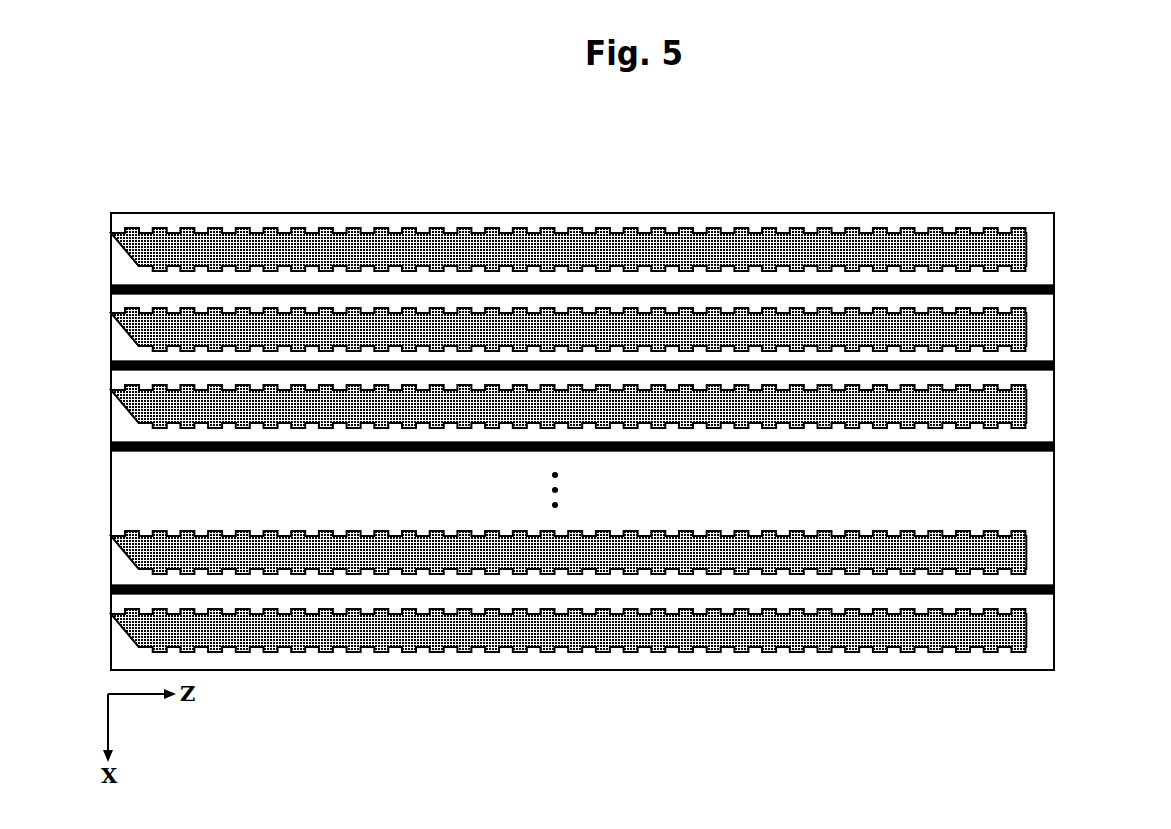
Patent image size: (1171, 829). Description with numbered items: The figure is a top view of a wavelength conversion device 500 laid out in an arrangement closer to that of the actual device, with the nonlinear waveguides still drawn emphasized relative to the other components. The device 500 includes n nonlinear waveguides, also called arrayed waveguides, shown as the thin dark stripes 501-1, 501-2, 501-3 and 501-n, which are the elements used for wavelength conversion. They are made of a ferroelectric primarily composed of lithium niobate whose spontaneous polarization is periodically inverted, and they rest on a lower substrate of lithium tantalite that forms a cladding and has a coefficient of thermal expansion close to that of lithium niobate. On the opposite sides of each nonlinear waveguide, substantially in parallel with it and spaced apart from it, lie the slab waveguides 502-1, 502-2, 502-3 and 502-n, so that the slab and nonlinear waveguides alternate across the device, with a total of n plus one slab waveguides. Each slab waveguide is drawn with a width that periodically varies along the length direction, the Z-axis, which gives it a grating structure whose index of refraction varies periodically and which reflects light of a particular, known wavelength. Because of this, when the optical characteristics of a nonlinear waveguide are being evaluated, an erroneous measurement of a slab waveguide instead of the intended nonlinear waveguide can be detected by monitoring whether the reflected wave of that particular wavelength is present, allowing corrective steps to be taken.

The wavelength conversion device 500 is at (575, 197).
The nonlinear waveguide 501-1 is at (1041, 287).
The nonlinear waveguide 501-2 is at (1041, 365).
The nonlinear waveguide 501-3 is at (1041, 445).
The nonlinear waveguide 501-n is at (1041, 588).
The slab waveguide 502-1 is at (1043, 244).
The slab waveguide 502-2 is at (1042, 325).
The slab waveguide 502-3 is at (1042, 405).
The slab waveguide 502-n is at (1042, 548).